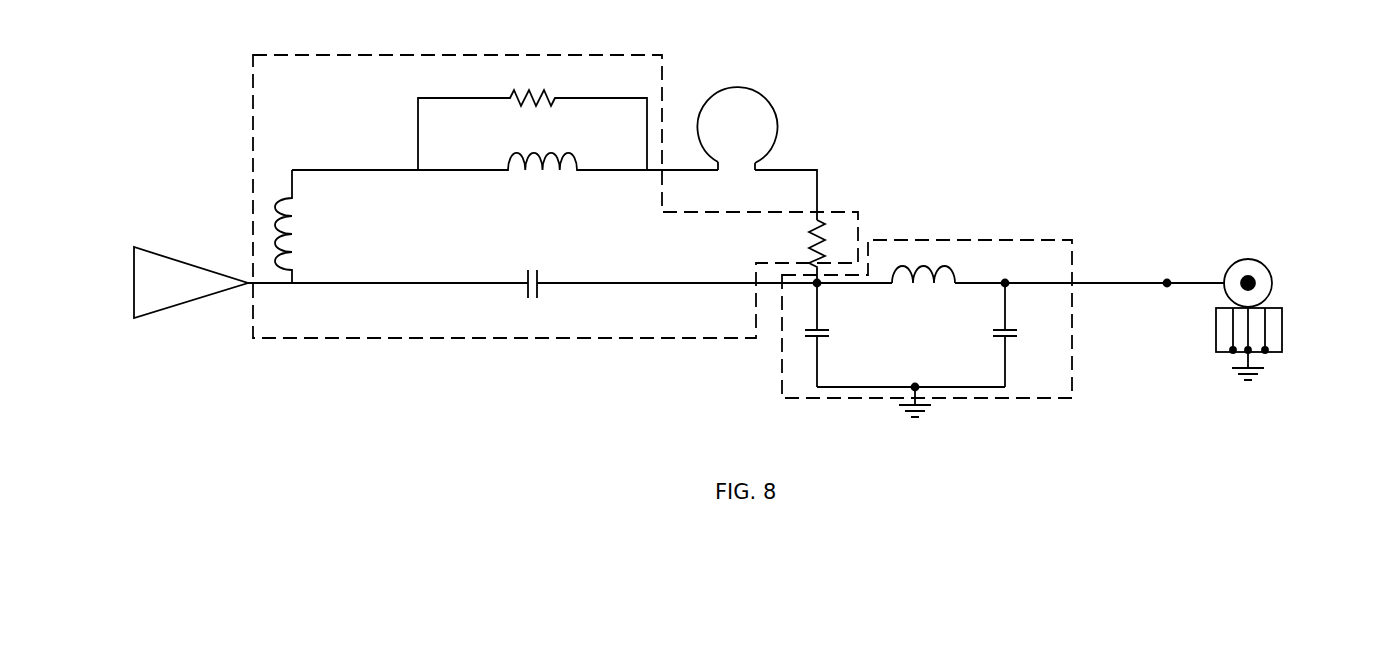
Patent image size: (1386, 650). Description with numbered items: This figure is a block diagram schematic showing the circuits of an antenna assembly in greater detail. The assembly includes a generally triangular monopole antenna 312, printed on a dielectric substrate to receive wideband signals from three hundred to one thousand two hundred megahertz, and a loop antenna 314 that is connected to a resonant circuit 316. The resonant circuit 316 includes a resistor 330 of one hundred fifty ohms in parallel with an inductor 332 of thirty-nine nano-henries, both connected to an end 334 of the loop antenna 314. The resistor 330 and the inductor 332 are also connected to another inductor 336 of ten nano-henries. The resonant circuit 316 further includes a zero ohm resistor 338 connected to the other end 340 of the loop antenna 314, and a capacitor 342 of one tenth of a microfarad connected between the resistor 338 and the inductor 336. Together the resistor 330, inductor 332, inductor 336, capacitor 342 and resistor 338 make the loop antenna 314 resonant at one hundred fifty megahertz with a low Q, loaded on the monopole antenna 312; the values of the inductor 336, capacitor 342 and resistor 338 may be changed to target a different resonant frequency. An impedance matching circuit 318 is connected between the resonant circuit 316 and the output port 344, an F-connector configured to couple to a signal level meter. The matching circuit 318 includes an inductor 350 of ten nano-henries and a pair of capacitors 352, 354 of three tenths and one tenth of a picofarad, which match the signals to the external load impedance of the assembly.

The monopole antenna 312 is at (165, 200).
The loop antenna 314 is at (814, 84).
The resonant circuit 316 is at (623, 52).
The impedance matching circuit 318 is at (1005, 238).
The resistor 330 is at (480, 72).
The inductor 332 is at (572, 195).
The end of the loop antenna 334 is at (718, 166).
The inductor 336 is at (354, 228).
The resistor 338 is at (785, 238).
The end of the loop antenna 340 is at (777, 138).
The capacitor 342 is at (503, 297).
The port 344 is at (1294, 209).
The inductor 350 is at (950, 247).
The capacitor 352 is at (853, 385).
The capacitor 354 is at (1037, 382).